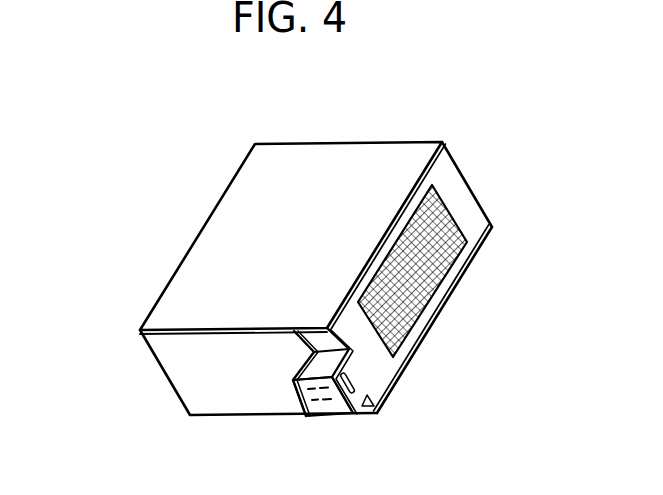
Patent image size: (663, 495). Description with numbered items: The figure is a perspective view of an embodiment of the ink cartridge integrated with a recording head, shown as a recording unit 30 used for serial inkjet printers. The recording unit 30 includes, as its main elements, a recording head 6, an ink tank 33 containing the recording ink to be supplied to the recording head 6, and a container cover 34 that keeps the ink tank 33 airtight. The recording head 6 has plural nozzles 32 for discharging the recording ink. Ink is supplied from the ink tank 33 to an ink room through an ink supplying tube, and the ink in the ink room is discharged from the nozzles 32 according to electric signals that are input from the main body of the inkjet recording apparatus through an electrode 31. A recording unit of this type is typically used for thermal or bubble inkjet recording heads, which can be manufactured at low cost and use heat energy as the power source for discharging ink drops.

The recording unit 30 is at (321, 275).
The container cover 34 is at (331, 158).
The electrode 31 is at (423, 280).
The ink tank 33 is at (217, 367).
The nozzles 32 is at (313, 394).
The recording head 6 is at (322, 416).